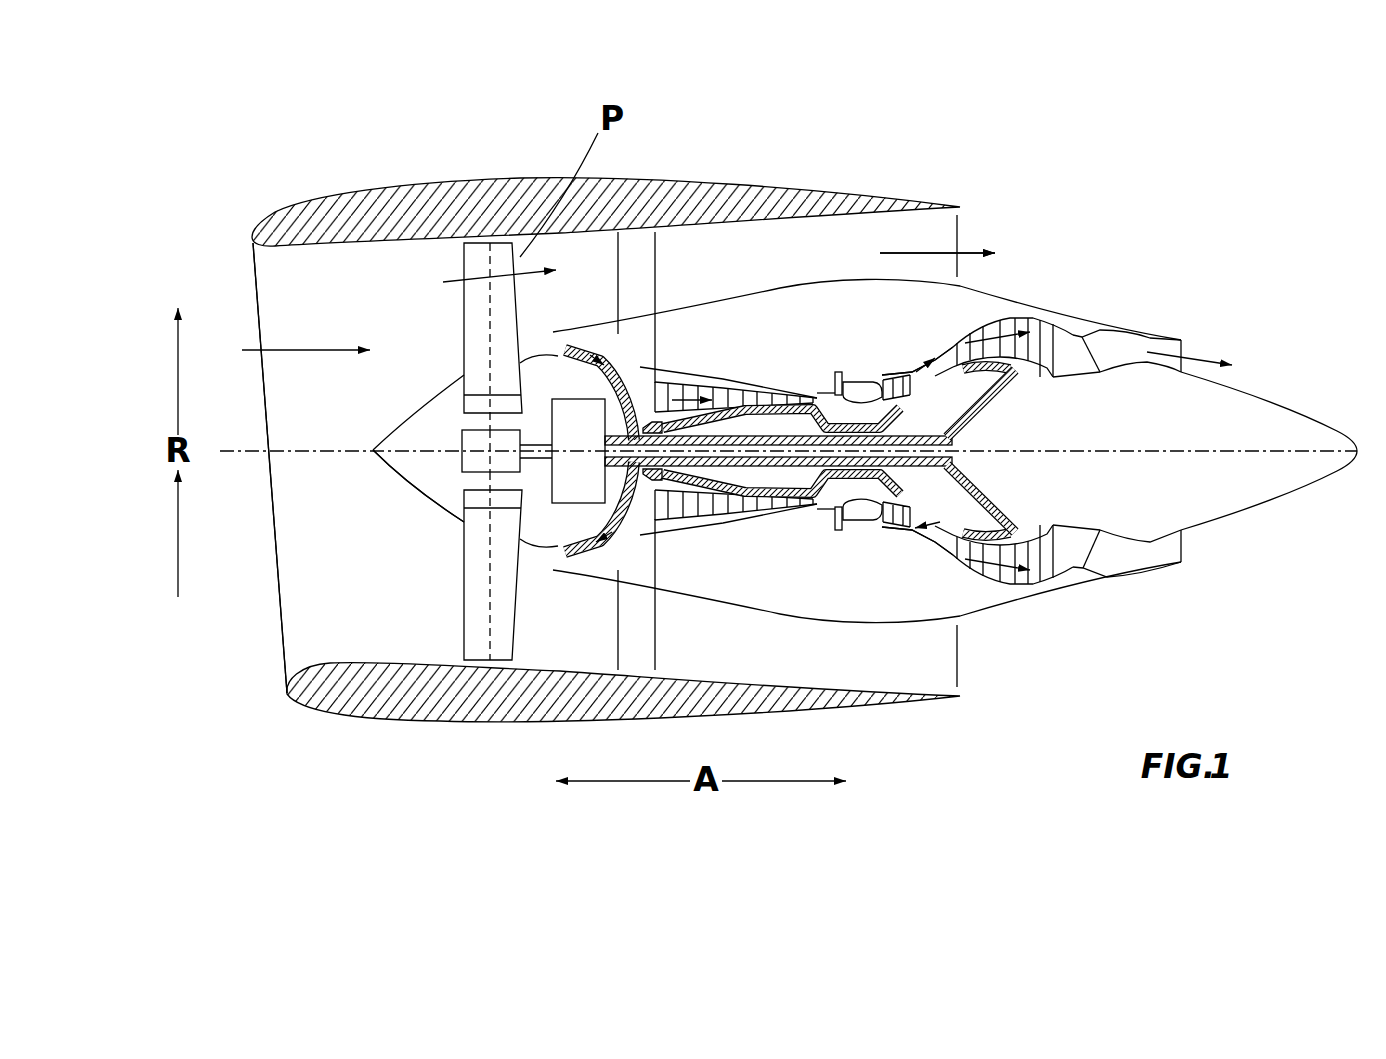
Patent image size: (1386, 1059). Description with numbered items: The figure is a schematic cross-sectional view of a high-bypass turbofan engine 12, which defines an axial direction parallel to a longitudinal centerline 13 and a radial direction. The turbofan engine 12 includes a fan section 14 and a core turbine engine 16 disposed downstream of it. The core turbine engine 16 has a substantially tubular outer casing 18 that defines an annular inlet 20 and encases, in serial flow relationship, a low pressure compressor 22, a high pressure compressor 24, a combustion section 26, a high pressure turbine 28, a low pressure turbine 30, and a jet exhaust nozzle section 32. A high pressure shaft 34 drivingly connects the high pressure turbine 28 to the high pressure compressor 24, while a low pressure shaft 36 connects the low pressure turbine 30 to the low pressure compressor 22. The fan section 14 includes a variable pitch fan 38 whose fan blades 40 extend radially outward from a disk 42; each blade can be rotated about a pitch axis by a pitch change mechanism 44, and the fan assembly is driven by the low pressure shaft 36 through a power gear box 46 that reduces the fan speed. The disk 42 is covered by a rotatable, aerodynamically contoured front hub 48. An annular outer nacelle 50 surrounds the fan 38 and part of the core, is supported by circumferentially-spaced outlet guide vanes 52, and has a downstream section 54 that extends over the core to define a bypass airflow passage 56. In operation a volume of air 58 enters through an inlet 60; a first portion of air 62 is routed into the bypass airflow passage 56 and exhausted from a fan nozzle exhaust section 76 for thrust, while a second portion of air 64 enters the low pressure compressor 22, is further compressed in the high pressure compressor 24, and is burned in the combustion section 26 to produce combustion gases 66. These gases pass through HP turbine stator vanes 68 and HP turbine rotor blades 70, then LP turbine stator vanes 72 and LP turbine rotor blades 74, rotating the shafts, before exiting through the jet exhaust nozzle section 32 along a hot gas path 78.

The turbofan engine 12 is at (1100, 193).
The longitudinal centerline 13 is at (1122, 451).
The fan section 14 is at (421, 268).
The core turbine engine 16 is at (776, 338).
The outer casing 18 is at (810, 617).
The annular inlet 20 is at (557, 567).
The low pressure compressor 22 is at (613, 517).
The high pressure compressor 24 is at (684, 503).
The combustion section 26 is at (853, 513).
The high pressure turbine 28 is at (993, 507).
The low pressure turbine 30 is at (1041, 578).
The jet exhaust nozzle section 32 is at (1100, 557).
The high pressure shaft 34 is at (895, 424).
The low pressure shaft 36 is at (990, 402).
The variable pitch fan 38 is at (430, 506).
The fan blades 40 is at (460, 602).
The disk 42 is at (462, 403).
The pitch change mechanism 44 is at (460, 390).
The power gear box 46 is at (593, 413).
The front hub 48 is at (388, 470).
The outer nacelle 50 is at (510, 727).
The outlet guide vanes 52 is at (657, 257).
The downstream section 54 is at (898, 208).
The bypass airflow passage 56 is at (802, 271).
The volume of air 58 is at (300, 350).
The inlet 60 is at (288, 662).
The first portion of air 62 is at (480, 282).
The second portion of air 64 is at (545, 330).
The combustion gases 66 is at (893, 375).
The HP turbine stator vanes 68 is at (867, 527).
The HP turbine rotor blades 70 is at (940, 483).
The LP turbine stator vanes 72 is at (962, 563).
The LP turbine rotor blades 74 is at (977, 573).
The fan nozzle exhaust section 76 is at (945, 237).
The hot gas path 78 is at (942, 353).